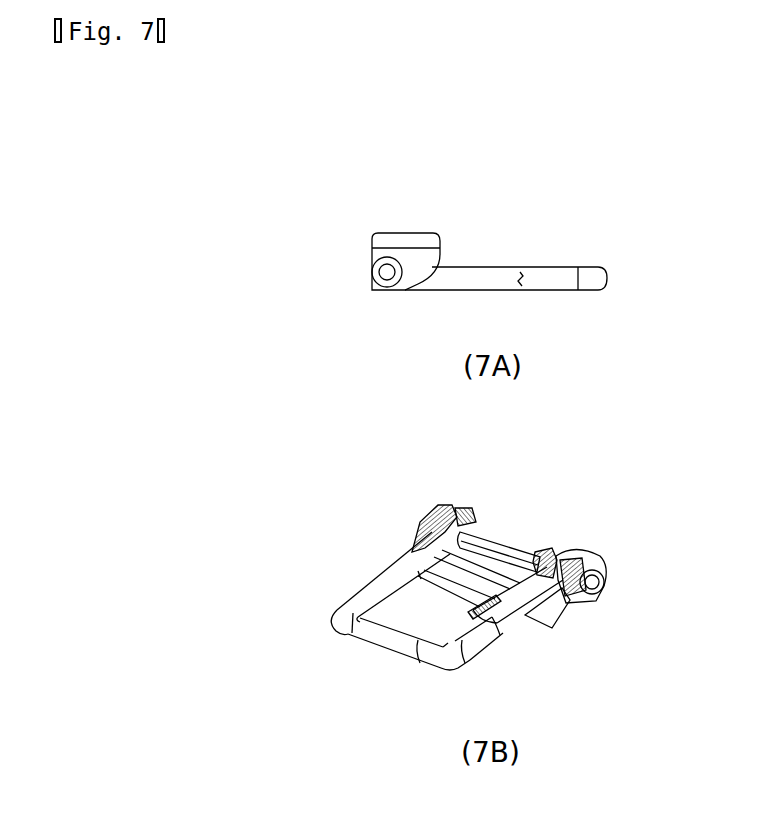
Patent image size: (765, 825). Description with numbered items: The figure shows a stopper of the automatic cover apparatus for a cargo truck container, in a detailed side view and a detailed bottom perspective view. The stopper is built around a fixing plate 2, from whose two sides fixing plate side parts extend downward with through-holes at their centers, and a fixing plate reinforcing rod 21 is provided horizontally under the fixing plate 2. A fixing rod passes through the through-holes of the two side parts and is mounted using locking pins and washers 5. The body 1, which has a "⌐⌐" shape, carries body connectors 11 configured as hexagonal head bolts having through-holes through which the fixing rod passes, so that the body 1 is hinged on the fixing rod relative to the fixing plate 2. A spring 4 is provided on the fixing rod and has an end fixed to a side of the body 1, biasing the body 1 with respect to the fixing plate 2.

In FIG. 7A, the body 1 is at (593, 282).
In FIG. 7B, the body 1 is at (383, 638).
In FIG. 7A, the fixing plate 2 is at (422, 240).
In FIG. 7B, the spring 4 is at (549, 550).
In FIG. 7B, the washers 5 is at (437, 510).
In FIG. 7B, the body connectors 11 is at (468, 524).
In FIG. 7B, the fixing plate reinforcing rod 21 is at (543, 625).